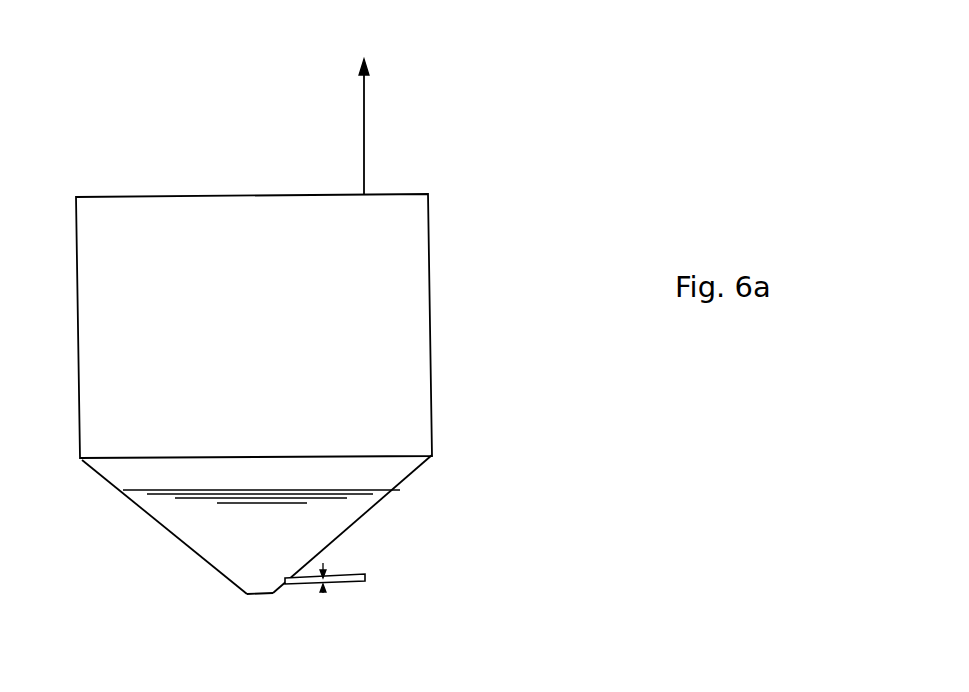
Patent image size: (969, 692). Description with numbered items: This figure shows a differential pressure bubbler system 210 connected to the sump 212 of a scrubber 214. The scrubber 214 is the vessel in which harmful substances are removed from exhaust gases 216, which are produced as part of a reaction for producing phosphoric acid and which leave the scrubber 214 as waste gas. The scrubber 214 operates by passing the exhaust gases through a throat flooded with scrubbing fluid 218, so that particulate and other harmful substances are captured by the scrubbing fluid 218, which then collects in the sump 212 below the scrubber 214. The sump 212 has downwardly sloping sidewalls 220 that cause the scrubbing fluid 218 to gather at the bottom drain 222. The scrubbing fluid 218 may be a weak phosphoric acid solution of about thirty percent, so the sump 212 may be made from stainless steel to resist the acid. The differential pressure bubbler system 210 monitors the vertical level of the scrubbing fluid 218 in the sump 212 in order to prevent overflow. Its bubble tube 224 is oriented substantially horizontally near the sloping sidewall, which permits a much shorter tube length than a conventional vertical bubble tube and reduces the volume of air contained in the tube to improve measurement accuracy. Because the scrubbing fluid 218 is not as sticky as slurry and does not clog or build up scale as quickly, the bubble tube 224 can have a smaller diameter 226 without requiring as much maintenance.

The differential pressure bubbler system 210 is at (470, 563).
The sump 212 is at (405, 480).
The scrubber 214 is at (430, 323).
The exhaust gases 216 is at (364, 125).
The scrubbing fluid 218 is at (323, 522).
The downwardly sloping sidewalls 220 is at (170, 533).
The bottom drain 222 is at (257, 594).
The bubble tube 224 is at (353, 582).
The diameter 226 is at (323, 593).